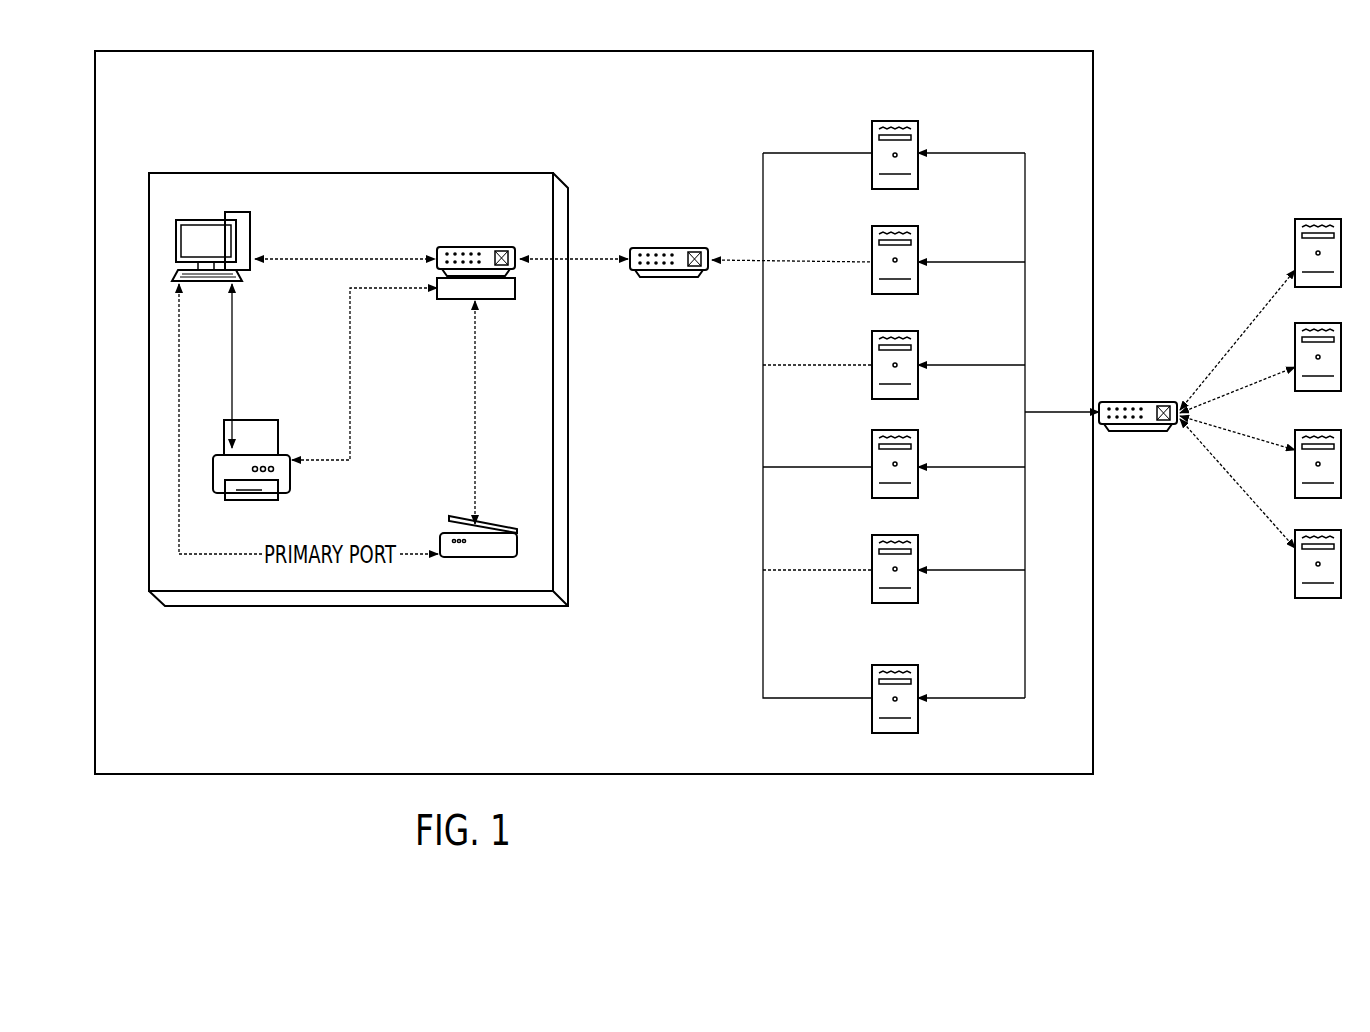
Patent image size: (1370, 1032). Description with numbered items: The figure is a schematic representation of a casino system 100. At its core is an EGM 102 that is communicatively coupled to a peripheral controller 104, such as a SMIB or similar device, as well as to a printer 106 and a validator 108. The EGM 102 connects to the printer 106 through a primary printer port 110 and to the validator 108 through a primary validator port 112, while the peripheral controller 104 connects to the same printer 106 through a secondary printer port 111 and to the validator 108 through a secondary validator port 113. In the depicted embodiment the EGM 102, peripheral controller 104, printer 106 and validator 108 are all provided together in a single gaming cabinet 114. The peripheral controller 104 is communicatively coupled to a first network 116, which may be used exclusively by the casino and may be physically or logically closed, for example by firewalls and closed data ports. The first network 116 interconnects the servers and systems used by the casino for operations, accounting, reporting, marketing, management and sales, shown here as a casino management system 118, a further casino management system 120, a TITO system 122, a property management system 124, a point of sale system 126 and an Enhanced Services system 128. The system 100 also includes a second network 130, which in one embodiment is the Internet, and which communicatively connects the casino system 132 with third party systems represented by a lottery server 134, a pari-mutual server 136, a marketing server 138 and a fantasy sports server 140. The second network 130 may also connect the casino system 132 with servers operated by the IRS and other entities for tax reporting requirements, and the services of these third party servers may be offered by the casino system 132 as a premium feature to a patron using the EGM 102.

The system 100 is at (838, 817).
The EGM 102 is at (210, 215).
The peripheral controller 104 is at (488, 250).
The printer 106 is at (258, 495).
The validator 108 is at (478, 560).
The primary printer port 110 is at (236, 450).
The secondary printer port 111 is at (292, 462).
The primary validator port 112 is at (432, 560).
The secondary validator port 113 is at (490, 560).
The gaming cabinet 114 is at (556, 486).
The first network 116 is at (665, 250).
The casino management system 118 is at (908, 148).
The casino management system 120 is at (918, 232).
The TITO system 122 is at (918, 337).
The property management system 124 is at (918, 444).
The point of sale system 126 is at (918, 541).
The Enhanced Services system 128 is at (895, 684).
The second network 130 is at (1143, 428).
The casino system 132 is at (1085, 733).
The lottery server 134 is at (1313, 255).
The pari-mutual server 136 is at (1317, 357).
The marketing server 138 is at (1313, 475).
The fantasy sports server 140 is at (1313, 573).